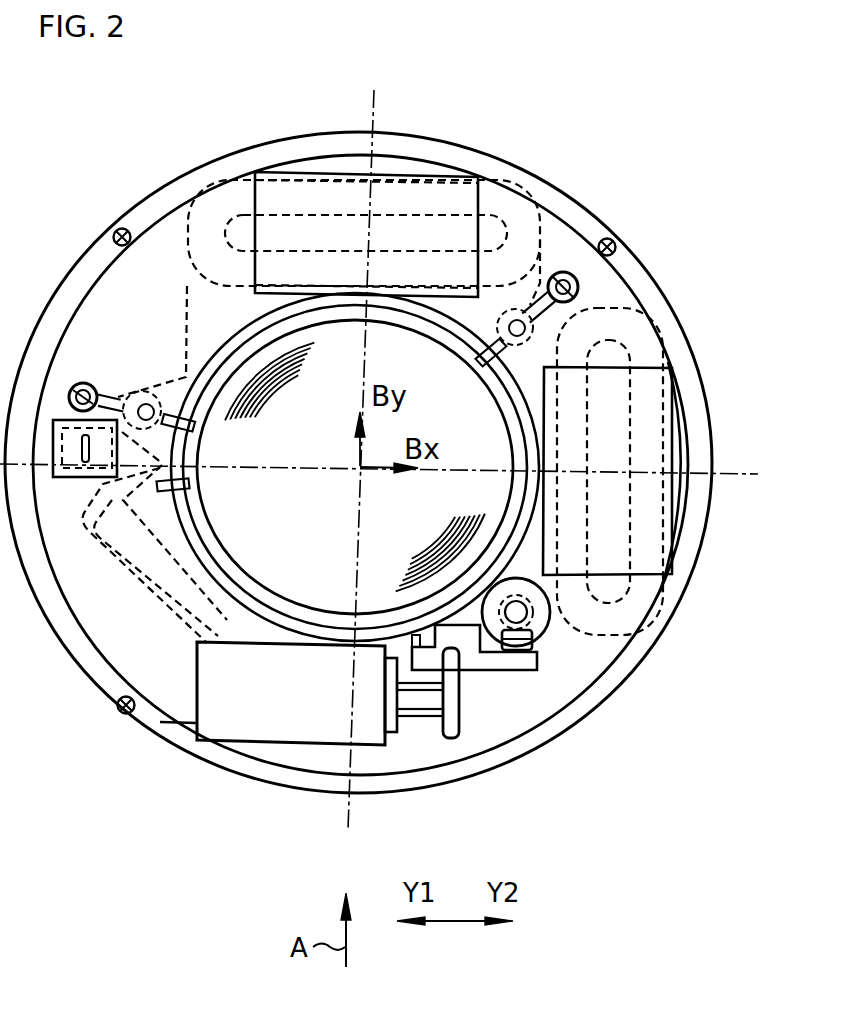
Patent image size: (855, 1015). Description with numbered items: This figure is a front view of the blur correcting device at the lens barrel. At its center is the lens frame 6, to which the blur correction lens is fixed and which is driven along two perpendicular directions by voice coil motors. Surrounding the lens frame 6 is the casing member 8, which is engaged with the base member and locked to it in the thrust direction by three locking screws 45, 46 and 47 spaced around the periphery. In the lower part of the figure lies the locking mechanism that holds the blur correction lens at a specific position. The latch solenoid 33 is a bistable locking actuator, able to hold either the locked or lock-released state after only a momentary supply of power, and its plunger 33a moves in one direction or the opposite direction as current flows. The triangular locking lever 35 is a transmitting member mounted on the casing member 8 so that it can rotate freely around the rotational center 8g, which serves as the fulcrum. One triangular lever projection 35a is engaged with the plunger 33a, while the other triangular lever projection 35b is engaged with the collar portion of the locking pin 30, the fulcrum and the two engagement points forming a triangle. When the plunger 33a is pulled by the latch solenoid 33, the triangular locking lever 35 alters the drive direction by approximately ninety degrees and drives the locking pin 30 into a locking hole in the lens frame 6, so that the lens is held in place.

The lens frame 6 is at (525, 448).
The casing member 8 is at (693, 533).
The rotational center 8g is at (389, 657).
The locking pin 30 is at (520, 610).
The latch solenoid 33 is at (277, 715).
The plunger 33a is at (452, 697).
The triangular locking lever 35 is at (517, 660).
The triangular lever projection 35a is at (427, 655).
The triangular lever projection 35b is at (532, 645).
The locking screw 45 is at (614, 243).
The locking screw 46 is at (117, 230).
The locking screw 47 is at (120, 712).